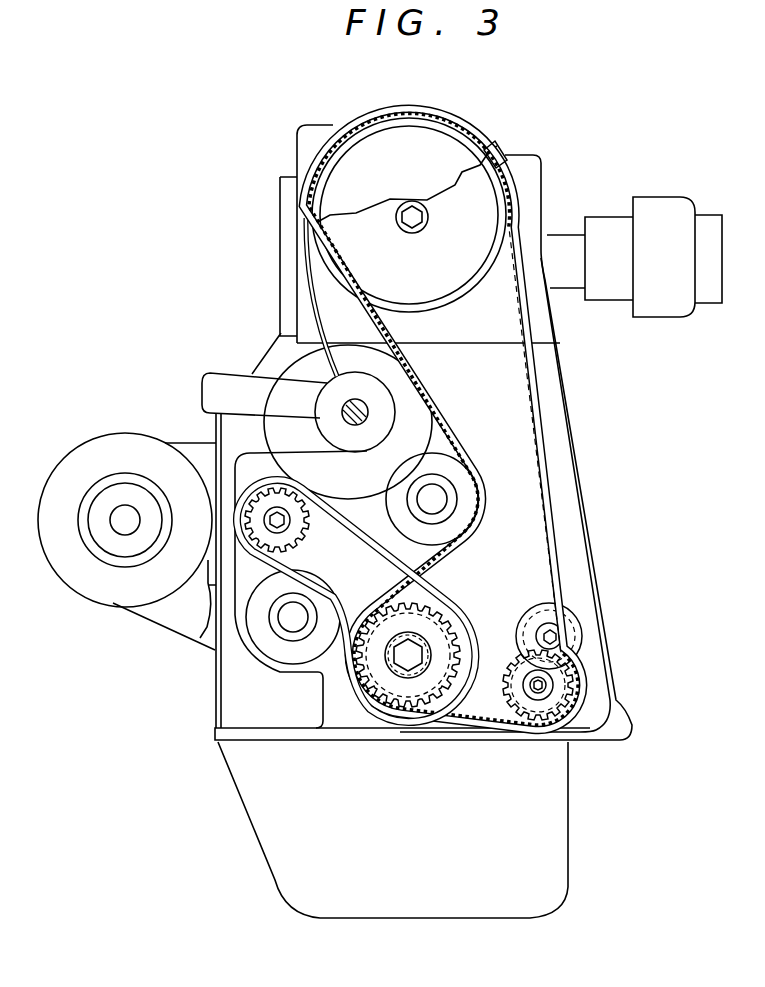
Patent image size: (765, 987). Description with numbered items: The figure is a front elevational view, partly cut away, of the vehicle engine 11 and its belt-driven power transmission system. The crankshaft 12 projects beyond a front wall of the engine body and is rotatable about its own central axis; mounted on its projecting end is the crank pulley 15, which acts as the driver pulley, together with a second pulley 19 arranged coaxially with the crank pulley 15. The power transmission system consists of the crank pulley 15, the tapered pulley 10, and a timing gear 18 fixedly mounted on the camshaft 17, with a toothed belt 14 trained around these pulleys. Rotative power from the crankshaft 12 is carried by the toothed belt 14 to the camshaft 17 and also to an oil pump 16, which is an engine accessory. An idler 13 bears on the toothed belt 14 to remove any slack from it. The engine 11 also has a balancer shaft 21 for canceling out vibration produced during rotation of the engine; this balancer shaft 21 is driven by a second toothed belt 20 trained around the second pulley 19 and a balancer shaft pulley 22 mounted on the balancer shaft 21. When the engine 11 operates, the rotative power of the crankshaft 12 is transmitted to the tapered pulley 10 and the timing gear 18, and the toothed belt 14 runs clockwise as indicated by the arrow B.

The tapered pulley 10 is at (508, 698).
The vehicle engine 11 is at (571, 190).
The crankshaft 12 is at (428, 638).
The idler 13 is at (455, 478).
The toothed belt 14 is at (529, 400).
The crank pulley 15 is at (445, 660).
The oil pump 16 is at (543, 611).
The camshaft 17 is at (419, 231).
The timing gear 18 is at (477, 187).
The second pulley 19 is at (458, 628).
The second toothed belt 20 is at (312, 579).
The balancer shaft 21 is at (288, 530).
The balancer shaft pulley 22 is at (262, 500).
The arrow B is at (571, 524).